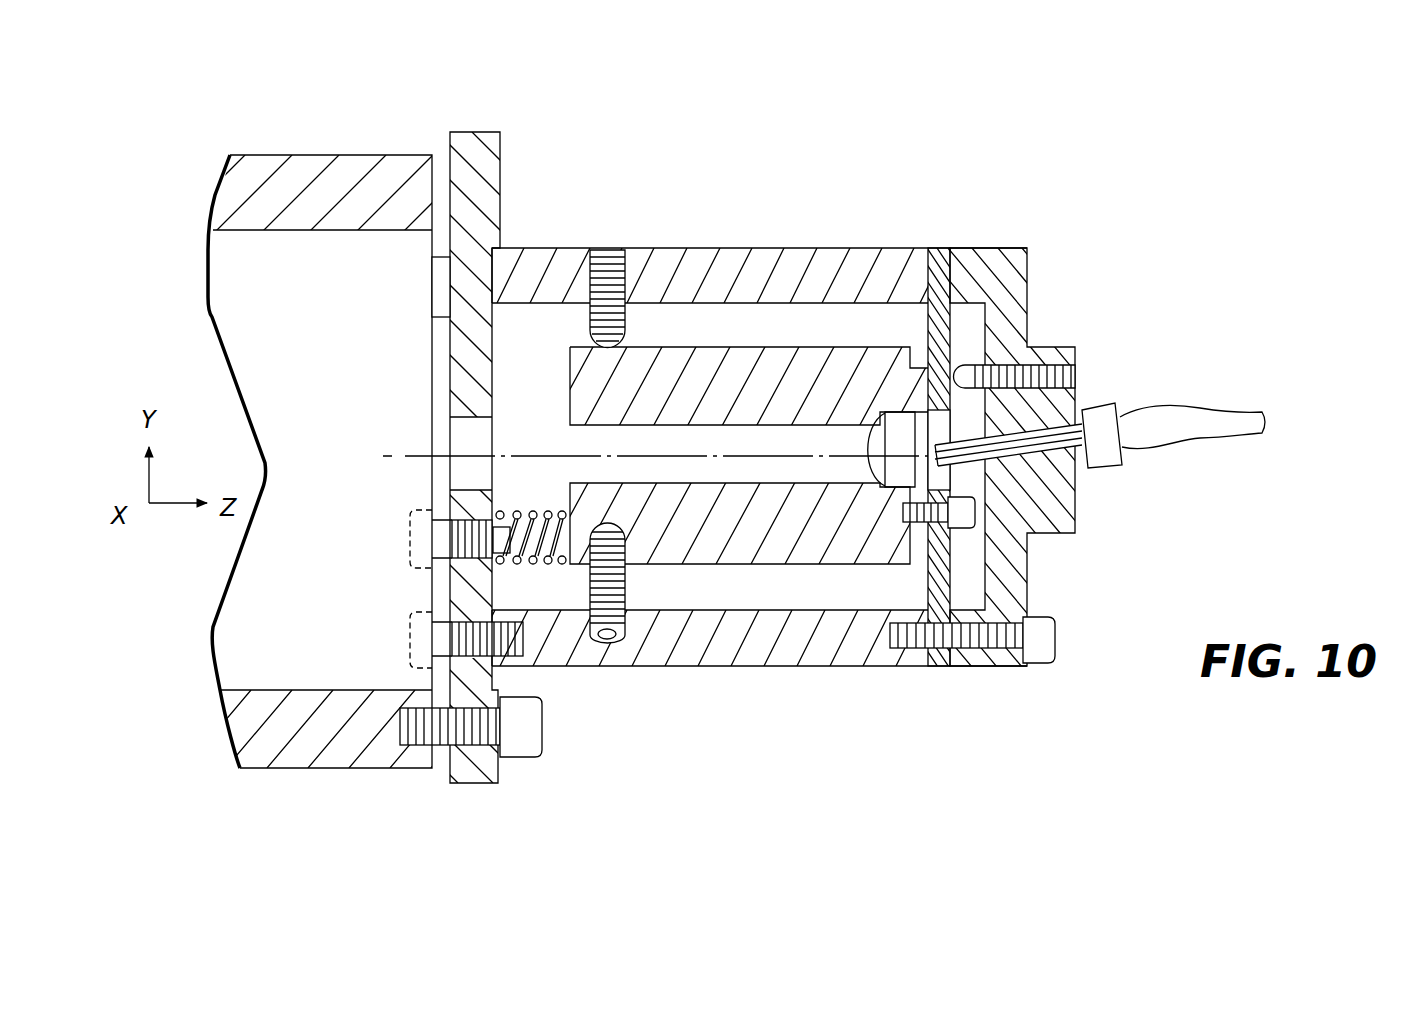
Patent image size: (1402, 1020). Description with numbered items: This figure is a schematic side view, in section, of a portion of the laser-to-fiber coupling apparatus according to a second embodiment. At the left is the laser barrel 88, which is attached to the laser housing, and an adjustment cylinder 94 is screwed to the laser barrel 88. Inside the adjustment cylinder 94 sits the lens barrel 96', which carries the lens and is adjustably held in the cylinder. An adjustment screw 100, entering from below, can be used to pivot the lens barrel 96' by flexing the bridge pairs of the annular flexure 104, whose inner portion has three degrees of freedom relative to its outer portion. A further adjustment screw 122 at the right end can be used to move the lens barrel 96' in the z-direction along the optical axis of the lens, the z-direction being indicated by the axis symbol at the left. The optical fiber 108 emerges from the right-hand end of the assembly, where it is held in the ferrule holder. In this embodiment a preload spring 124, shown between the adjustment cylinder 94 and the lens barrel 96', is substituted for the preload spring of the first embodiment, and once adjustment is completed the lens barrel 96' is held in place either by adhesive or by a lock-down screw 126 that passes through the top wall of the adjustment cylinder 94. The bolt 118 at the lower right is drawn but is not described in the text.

The laser barrel 88 is at (300, 150).
The adjustment cylinder 94 is at (838, 672).
The lens barrel 96' is at (758, 382).
The adjustment screw 100 is at (613, 641).
The annular flexure 104 is at (940, 260).
The optical fiber 108 is at (1110, 400).
The bolt 118 is at (1037, 652).
The adjustment screw 122 is at (1034, 368).
The preload spring 124 is at (552, 568).
The lock-down screw 126 is at (607, 258).